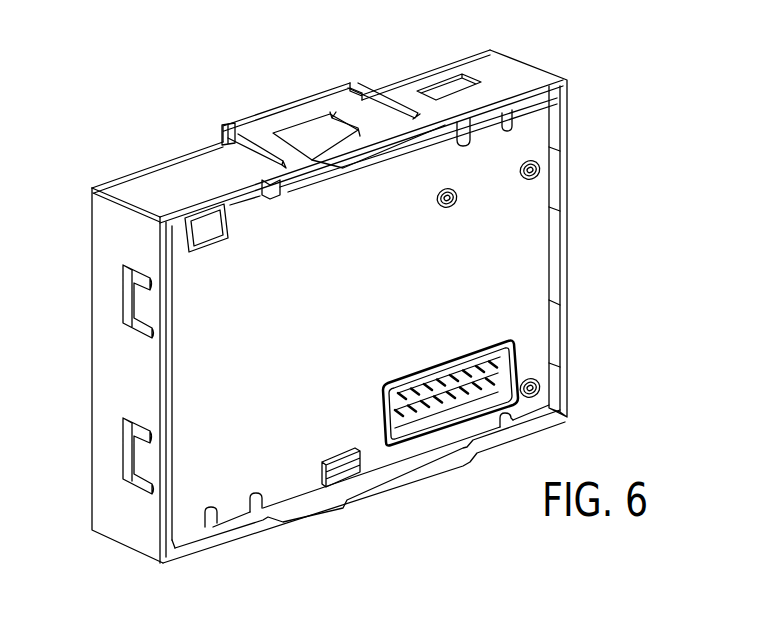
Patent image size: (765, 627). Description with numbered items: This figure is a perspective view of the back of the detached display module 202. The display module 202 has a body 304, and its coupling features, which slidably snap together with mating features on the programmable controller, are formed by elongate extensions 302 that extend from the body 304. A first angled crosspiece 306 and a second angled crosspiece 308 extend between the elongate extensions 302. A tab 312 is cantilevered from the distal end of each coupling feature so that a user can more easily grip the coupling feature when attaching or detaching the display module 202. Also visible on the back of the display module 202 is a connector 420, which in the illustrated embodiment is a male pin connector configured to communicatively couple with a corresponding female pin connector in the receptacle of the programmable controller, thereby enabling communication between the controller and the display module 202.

The display module 202 is at (366, 281).
The elongate extensions 302 is at (240, 130).
The body 304 is at (152, 178).
The first angled crosspiece 306 is at (353, 147).
The second angled crosspiece 308 is at (298, 135).
The tab 312 is at (348, 86).
The connector 420 is at (520, 358).